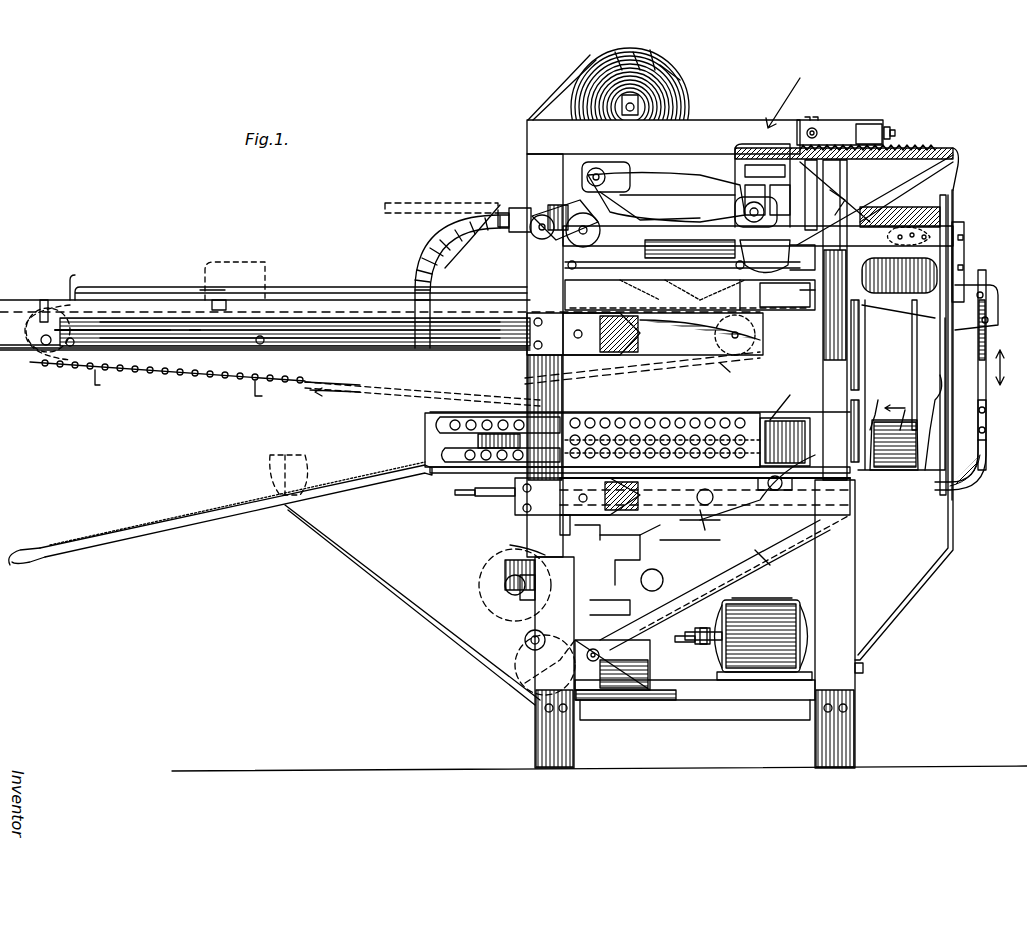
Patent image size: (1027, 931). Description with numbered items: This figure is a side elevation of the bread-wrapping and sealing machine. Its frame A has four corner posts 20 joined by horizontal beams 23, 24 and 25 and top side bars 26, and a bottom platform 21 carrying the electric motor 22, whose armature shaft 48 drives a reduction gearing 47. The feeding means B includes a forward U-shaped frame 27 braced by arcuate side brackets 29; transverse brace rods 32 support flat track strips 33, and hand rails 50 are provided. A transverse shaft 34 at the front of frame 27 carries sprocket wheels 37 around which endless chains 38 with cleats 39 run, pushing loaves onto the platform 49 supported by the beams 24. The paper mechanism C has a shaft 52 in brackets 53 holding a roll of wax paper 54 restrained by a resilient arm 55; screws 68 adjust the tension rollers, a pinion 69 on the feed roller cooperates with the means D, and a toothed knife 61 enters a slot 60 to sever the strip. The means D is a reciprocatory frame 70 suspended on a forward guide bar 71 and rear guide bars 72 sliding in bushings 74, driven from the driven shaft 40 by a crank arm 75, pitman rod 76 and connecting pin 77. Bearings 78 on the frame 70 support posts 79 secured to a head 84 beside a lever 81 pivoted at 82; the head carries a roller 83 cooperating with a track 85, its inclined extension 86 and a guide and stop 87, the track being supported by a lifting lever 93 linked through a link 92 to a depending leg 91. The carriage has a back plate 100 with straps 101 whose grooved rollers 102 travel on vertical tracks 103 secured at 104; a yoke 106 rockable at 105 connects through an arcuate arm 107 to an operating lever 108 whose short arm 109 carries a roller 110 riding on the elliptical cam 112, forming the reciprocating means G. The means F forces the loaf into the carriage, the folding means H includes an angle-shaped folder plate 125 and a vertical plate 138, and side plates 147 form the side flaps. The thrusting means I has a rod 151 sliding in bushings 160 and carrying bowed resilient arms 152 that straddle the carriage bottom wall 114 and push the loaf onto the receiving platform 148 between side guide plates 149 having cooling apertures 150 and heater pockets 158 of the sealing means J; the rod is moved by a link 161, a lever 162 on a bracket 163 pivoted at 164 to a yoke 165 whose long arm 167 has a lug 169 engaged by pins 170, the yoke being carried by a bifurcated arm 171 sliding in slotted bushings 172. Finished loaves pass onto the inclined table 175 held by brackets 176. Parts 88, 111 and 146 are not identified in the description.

The corner posts 20 is at (838, 605).
The bottom platform 21 is at (680, 700).
The prime mover 22 is at (748, 640).
The horizontally extending beams 23 is at (705, 495).
The horizontally extending beams 24 is at (663, 334).
The horizontally extending beams 25 is at (758, 236).
The top side bars 26 is at (695, 125).
The U-shaped forwardly extending frame 27 is at (335, 352).
The arcuate side brackets 29 is at (418, 272).
The transverse brace rods 32 is at (270, 300).
The longitudinally extending strips 33 is at (140, 290).
The transverse shaft 34 is at (50, 310).
The sprocket wheels 37 is at (45, 360).
The endless sprocket chains 38 is at (180, 378).
The flights or cleats 39 is at (215, 270).
The top driven shaft 40 is at (543, 222).
The reduction gearing 47 is at (700, 648).
The armature shaft 48 is at (755, 598).
The platform 49 is at (760, 355).
The hand rails 50 is at (335, 290).
The transversely extending shaft 52 is at (630, 110).
The brackets 53 is at (636, 112).
The roll of paper 54 is at (645, 60).
The resilient arm 55 is at (555, 95).
The guide knife slot 60 is at (930, 150).
The paper cutting knife 61 is at (745, 200).
The machine screws 68 is at (893, 130).
The pinion 69 is at (815, 133).
The reciprocatory frame 70 is at (668, 212).
The forwardly extending cylindrical guide bar 71 is at (470, 240).
The rearwardly extending cylindrical guide bars 72 is at (945, 210).
The bushings 74 is at (830, 200).
The crank arm 75 is at (560, 213).
The pitman rod 76 is at (690, 188).
The connecting pin 77 is at (770, 185).
The vertical bearings 78 is at (760, 205).
The posts 79 is at (700, 250).
The lever 81 is at (765, 258).
The pivot 82 is at (570, 235).
The roller 83 is at (863, 269).
The depending head 84 is at (722, 293).
The track 85 is at (660, 293).
The downwardly inclined extension 86 is at (808, 296).
The guide and stop 87 is at (645, 215).
The rail 88 is at (610, 290).
The depending leg 91 is at (560, 270).
The forwardly extending link 92 is at (563, 310).
The lifting lever 93 is at (785, 295).
The back plate 100 is at (610, 450).
The straps 101 is at (964, 228).
The grooved rollers 102 is at (955, 215).
The vertically disposed tracks 103 is at (986, 320).
The track securing points 104 is at (863, 668).
The rockable connection 105 is at (975, 285).
The depending yoke 106 is at (1011, 375).
The arcuate arm 107 is at (986, 470).
The operating lever 108 is at (580, 425).
The short arm 109 is at (525, 683).
The anti-friction roller 110 is at (525, 640).
The bracket 111 is at (612, 684).
The elliptical-shaped cam 112 is at (500, 568).
The bottom wall 114 is at (925, 335).
The angle-shaped plate 125 is at (905, 225).
The plate 138 is at (860, 355).
The link 146 is at (693, 549).
The upstanding side plates 147 is at (892, 407).
The receiving platform 148 is at (870, 400).
The side guide plates 149 is at (700, 445).
The apertures 150 is at (655, 440).
The rearwardly extending arm 151 is at (480, 498).
The bowed resilient arms 152 is at (940, 414).
The sheet metal pockets 158 is at (780, 440).
The bushings 160 is at (510, 500).
The link 161 is at (725, 520).
The operating lever 162 is at (666, 534).
The bracket 163 is at (690, 585).
The pivot 164 is at (641, 580).
The yoke 165 is at (640, 555).
The long arm 167 is at (623, 604).
The lug 169 is at (520, 590).
The operating pins 170 is at (510, 545).
The bifurcated arm 171 is at (640, 530).
The slotted bushings 172 is at (560, 525).
The inclined table 175 is at (210, 508).
The brackets 176 is at (380, 582).
The frame A is at (787, 93).
The feeding means B is at (170, 280).
The paper guiding and cutting mechanism C is at (680, 59).
The cutting mechanism setting means D is at (953, 155).
The loaf passing means F is at (870, 345).
The carriage reciprocating means G is at (763, 547).
The paper folding means H is at (913, 406).
The bread thrusting means I is at (986, 430).
The sealing means J is at (786, 397).